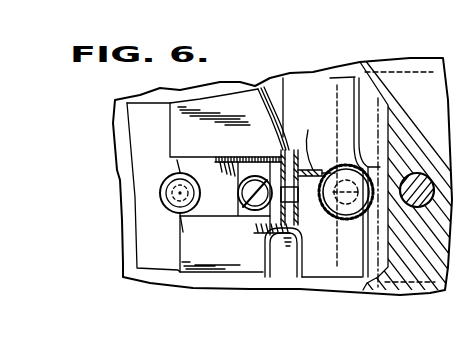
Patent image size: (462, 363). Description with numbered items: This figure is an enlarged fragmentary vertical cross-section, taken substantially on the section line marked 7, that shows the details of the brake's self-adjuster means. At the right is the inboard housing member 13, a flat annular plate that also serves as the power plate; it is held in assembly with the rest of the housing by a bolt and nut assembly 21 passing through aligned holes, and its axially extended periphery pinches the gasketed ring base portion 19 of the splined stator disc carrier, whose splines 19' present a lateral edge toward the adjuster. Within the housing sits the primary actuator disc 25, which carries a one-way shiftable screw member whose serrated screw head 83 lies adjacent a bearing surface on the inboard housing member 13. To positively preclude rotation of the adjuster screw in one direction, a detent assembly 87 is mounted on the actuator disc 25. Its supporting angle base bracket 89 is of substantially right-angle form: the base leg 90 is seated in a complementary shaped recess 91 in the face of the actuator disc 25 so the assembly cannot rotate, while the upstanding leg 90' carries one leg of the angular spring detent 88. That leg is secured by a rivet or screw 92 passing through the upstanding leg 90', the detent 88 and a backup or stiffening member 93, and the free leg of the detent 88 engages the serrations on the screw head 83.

The inboard housing member 13 is at (415, 60).
The gasketed ring base portion 19 is at (399, 42).
The splines of the stator carrier 19' is at (360, 145).
The bolt and nut assembly 21 is at (425, 207).
The primary actuator disc 25 is at (283, 88).
The screw head 83 is at (340, 162).
The detent assembly 87 is at (290, 160).
The angular spring detent 88 is at (311, 160).
The supporting angle base bracket 89 is at (240, 212).
The base leg 90 is at (225, 244).
The upstanding leg 90' is at (260, 243).
The recess 91 is at (232, 188).
The rivet or screw 92 is at (270, 152).
The backup or stiffening member 93 is at (297, 217).
The section line 7- 7 is at (377, 102).